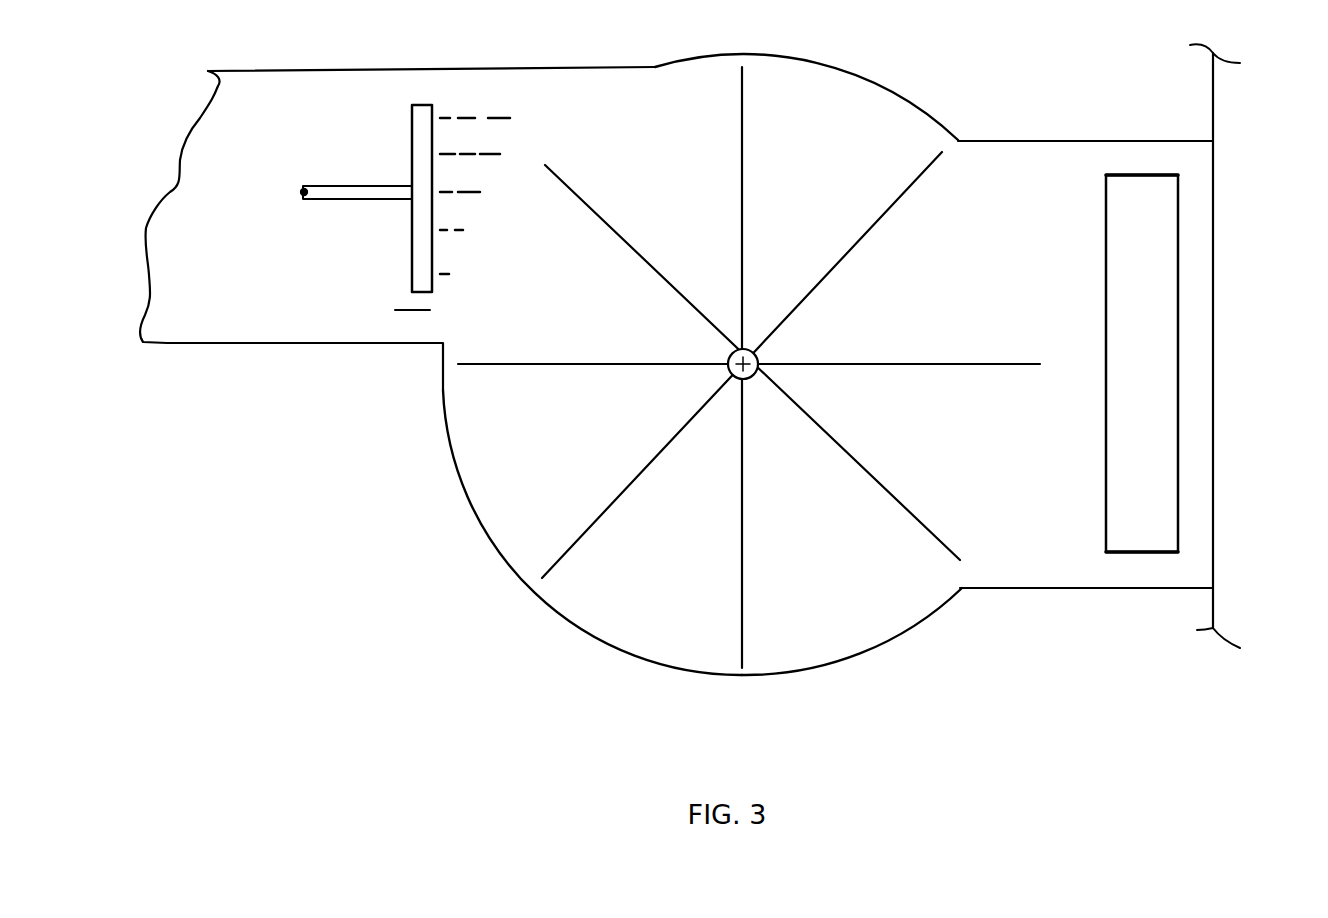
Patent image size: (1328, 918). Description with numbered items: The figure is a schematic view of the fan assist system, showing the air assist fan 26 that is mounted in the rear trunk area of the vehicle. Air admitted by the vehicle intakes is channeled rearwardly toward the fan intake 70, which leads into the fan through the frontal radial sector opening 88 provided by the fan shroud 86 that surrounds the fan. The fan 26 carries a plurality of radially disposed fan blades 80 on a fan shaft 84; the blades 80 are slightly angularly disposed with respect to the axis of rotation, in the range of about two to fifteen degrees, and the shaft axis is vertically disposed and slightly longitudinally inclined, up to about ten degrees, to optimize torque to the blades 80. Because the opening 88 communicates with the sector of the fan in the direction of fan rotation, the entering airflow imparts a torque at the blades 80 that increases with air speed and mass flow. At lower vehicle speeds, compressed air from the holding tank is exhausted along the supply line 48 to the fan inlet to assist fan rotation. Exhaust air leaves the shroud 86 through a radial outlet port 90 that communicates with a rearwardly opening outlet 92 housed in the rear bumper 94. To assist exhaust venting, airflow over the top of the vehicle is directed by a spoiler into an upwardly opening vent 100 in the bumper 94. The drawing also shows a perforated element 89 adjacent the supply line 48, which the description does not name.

The air assist fan 26 is at (870, 653).
The supply line 48 is at (328, 192).
The fan intake 70 is at (208, 308).
The fan blades 80 is at (742, 500).
The fan shaft 84 is at (730, 377).
The fan shroud 86 is at (660, 667).
The frontal radial sector opening 88 is at (395, 310).
The distributor plate 89 is at (477, 238).
The radial outlet port 90 is at (1060, 573).
The rearwardly opening outlet 92 is at (1213, 513).
The rear bumper 94 is at (1158, 588).
The upwardly opening vent 100 is at (1143, 190).